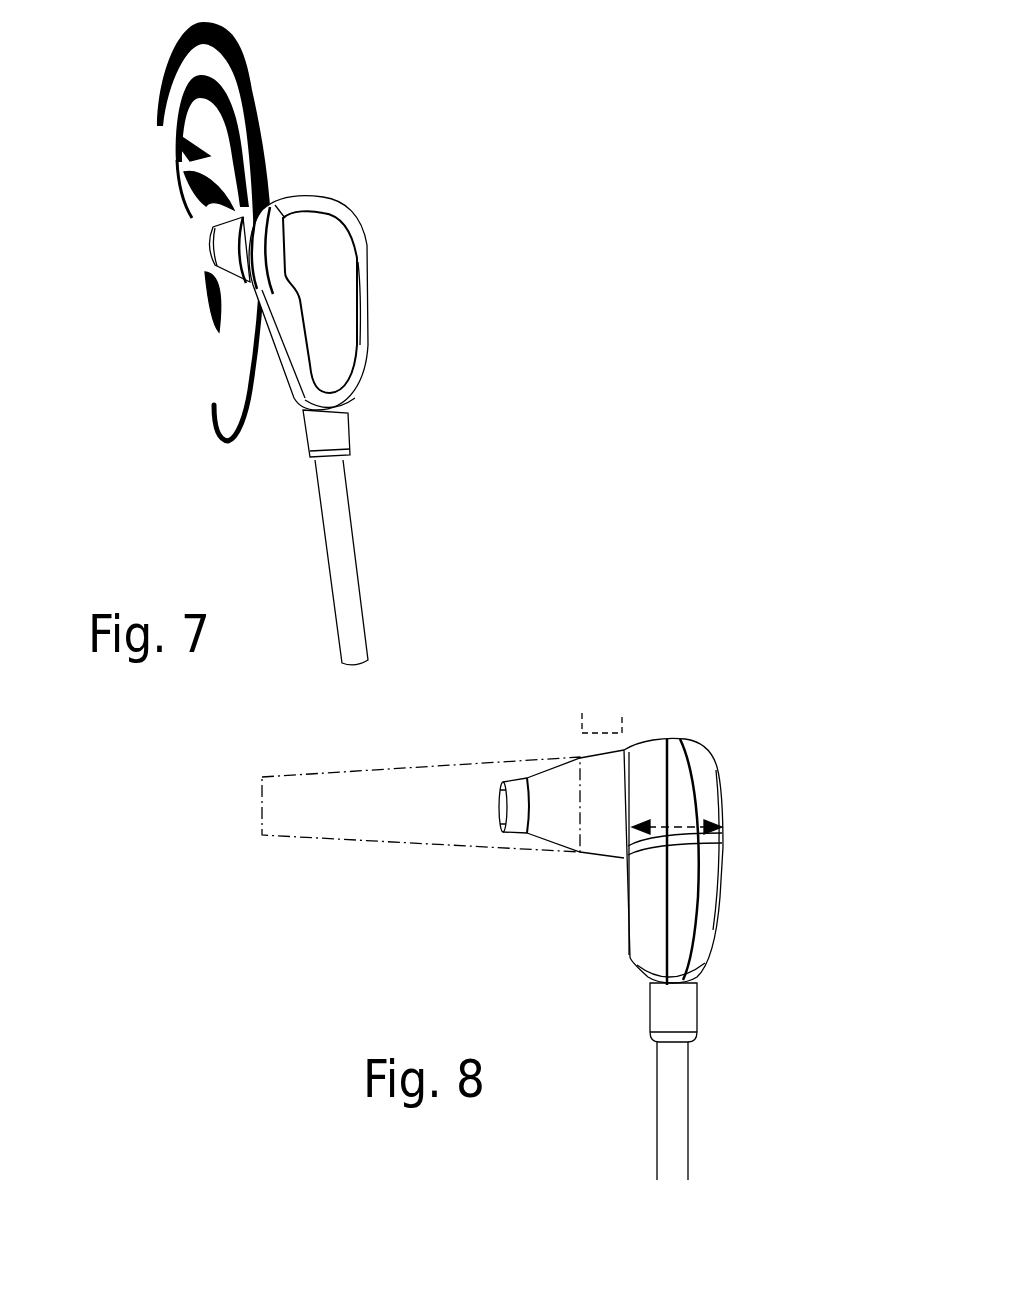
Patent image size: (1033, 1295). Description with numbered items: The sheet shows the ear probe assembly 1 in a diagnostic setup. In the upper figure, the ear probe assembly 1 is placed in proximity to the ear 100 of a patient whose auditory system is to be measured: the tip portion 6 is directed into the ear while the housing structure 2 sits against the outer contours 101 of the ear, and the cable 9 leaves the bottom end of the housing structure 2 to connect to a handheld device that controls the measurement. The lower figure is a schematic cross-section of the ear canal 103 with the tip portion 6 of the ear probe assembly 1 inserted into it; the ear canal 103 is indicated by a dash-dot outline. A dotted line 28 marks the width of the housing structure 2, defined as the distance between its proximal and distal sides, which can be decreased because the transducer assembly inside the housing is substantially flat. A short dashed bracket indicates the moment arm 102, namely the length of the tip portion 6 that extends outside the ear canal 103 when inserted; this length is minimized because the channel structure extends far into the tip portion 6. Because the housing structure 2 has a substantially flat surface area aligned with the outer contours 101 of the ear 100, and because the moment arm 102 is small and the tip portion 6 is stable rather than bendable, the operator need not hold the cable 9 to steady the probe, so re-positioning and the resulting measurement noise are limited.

In FIG. 7, the ear probe assembly 1 is at (299, 419).
In FIG. 7, the housing structure 2 is at (338, 205).
In FIG. 8, the housing structure 2 is at (712, 874).
In FIG. 7, the tip portion 6 is at (232, 250).
In FIG. 8, the tip portion 6 is at (571, 830).
In FIG. 7, the cable 9 is at (347, 556).
In FIG. 8, the cable 9 is at (675, 1147).
In FIG. 8, the width of the housing structure 28 is at (668, 828).
In FIG. 7, the ear 100 is at (220, 31).
In FIG. 7, the outer contours of the ear 101 is at (218, 214).
In FIG. 8, the outer contours of the ear 101 is at (586, 800).
In FIG. 8, the moment arm 102 is at (602, 724).
In FIG. 8, the ear canal 103 is at (365, 840).